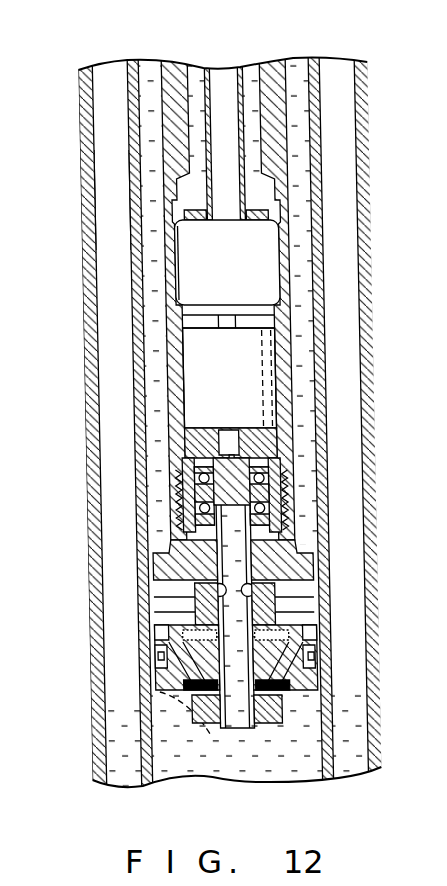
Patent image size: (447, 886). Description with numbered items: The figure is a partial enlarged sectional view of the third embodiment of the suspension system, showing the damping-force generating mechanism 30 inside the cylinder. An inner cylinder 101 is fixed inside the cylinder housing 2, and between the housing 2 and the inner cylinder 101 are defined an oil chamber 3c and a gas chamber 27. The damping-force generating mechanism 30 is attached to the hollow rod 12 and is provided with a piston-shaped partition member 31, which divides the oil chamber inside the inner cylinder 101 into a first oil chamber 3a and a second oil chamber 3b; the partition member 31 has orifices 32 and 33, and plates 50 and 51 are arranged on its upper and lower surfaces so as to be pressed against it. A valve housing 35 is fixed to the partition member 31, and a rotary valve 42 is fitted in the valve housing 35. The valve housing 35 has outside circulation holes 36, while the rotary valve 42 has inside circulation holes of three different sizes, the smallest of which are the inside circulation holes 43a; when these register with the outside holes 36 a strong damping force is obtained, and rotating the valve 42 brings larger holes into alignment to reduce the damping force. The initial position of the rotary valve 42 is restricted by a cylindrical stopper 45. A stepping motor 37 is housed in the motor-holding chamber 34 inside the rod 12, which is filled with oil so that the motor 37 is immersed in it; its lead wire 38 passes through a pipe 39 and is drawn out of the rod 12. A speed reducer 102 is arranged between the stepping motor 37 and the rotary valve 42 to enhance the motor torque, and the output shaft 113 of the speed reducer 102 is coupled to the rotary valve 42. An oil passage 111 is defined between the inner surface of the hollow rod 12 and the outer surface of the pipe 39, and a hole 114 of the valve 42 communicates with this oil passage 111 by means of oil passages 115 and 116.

The cylinder housing 2 is at (77, 160).
The first oil chamber 3a is at (290, 770).
The second oil chamber 3b is at (304, 525).
The oil chamber 3c is at (97, 780).
The rod 12 is at (164, 72).
The gas chamber 27 is at (99, 200).
The damping-force generating mechanism 30 is at (170, 760).
The partition member 31 is at (146, 683).
The orifice 32 is at (146, 692).
The orifice 33 is at (152, 655).
The motor-holding chamber 34 is at (169, 279).
The valve housing 35 is at (238, 592).
The outside circulation hole 36 is at (193, 600).
The stepping motor 37 is at (255, 240).
The lead wire 38 is at (220, 75).
The pipe 39 is at (244, 75).
The rotary valve 42 is at (255, 487).
The cylindrical stopper 45 is at (226, 723).
The inside circulation hole 43a is at (181, 583).
The plate 50 is at (172, 636).
The plate 51 is at (172, 698).
The inner cylinder 101 is at (130, 240).
The speed reducer 102 is at (181, 352).
The oil passage 111 is at (248, 77).
The output shaft 113 is at (216, 452).
The hole 114 is at (164, 553).
The oil passage 115 is at (179, 530).
The oil passage 116 is at (262, 360).